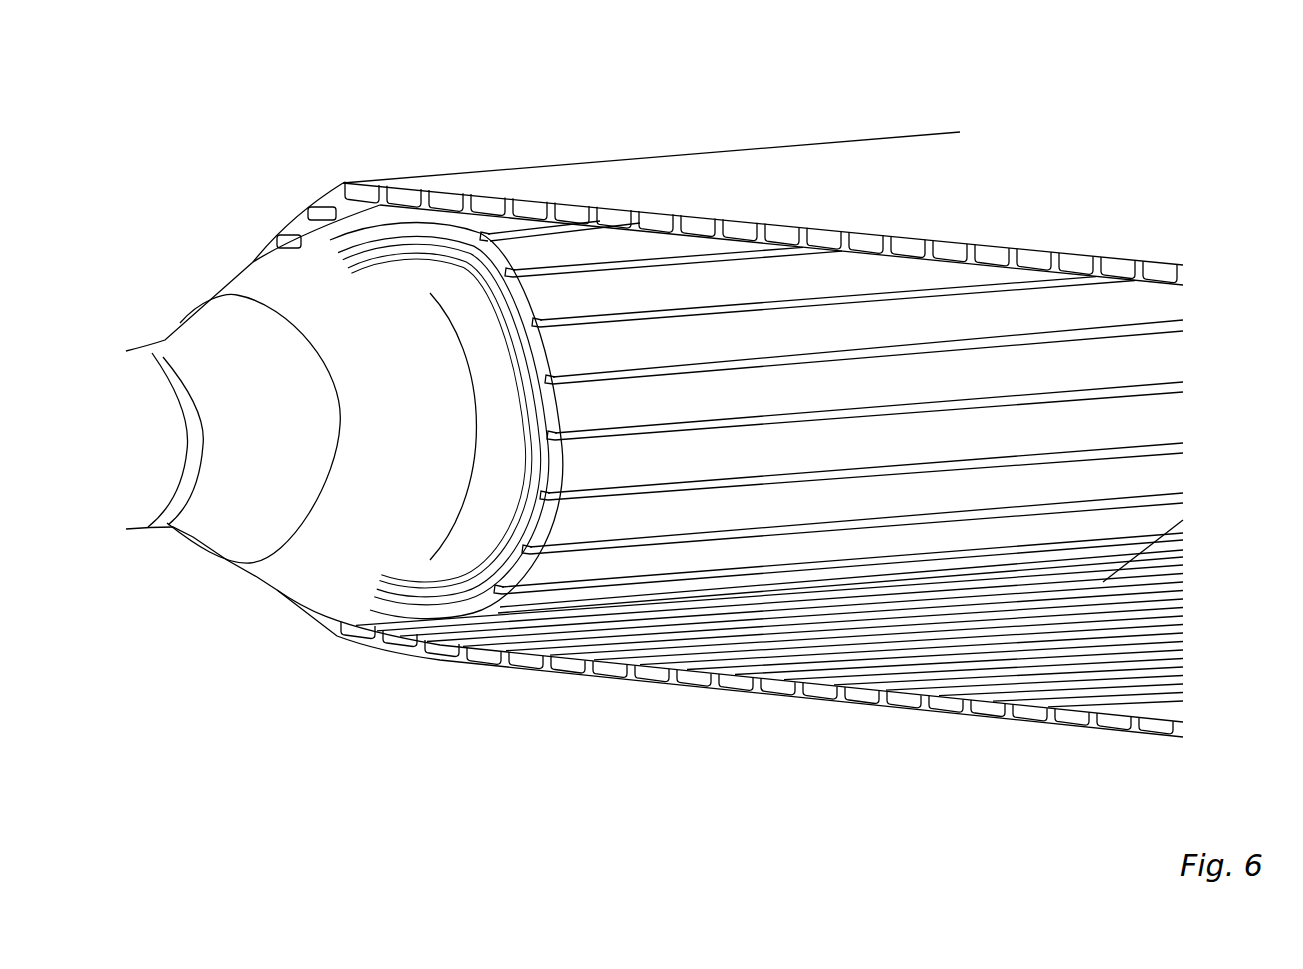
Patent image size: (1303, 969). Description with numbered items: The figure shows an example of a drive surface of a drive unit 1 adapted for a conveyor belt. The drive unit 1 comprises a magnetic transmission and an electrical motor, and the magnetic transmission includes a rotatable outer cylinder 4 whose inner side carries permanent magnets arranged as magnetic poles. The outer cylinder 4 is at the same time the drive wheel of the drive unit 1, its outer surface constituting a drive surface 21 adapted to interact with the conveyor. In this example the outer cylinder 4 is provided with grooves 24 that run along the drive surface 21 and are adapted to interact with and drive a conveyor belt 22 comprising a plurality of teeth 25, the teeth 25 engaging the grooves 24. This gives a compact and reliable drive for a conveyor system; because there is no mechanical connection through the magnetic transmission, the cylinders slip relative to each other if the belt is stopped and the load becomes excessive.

The drive unit 1 is at (324, 116).
The outer cylinder 4 is at (425, 648).
The drive surface 21 is at (533, 577).
The conveyor belt 22 is at (723, 182).
The grooves 24 is at (600, 543).
The teeth 25 is at (873, 680).